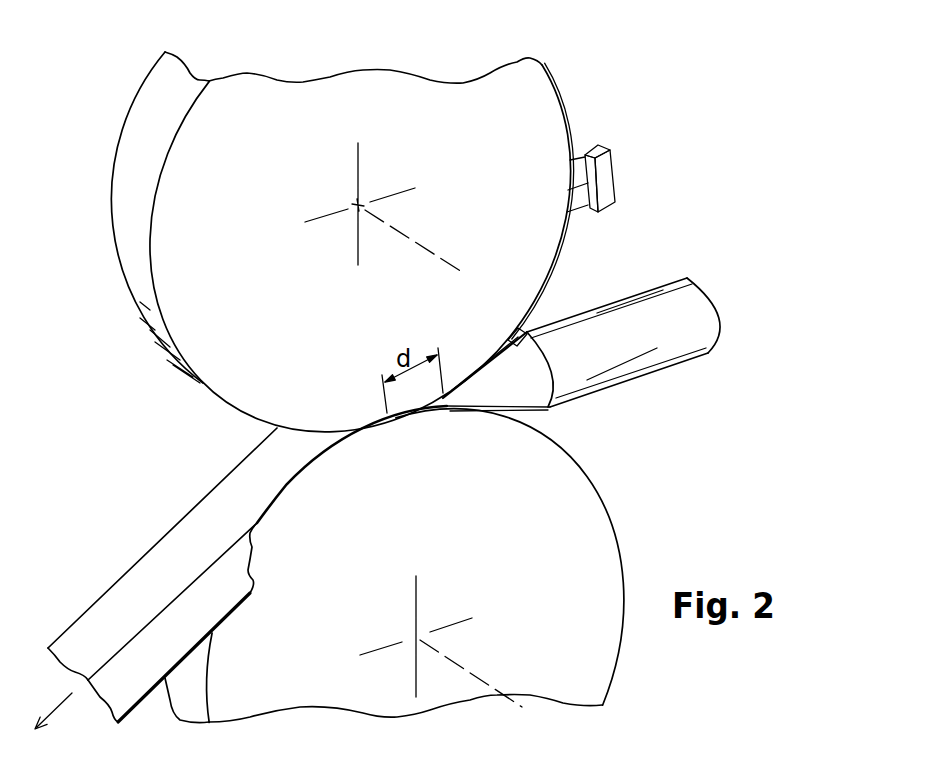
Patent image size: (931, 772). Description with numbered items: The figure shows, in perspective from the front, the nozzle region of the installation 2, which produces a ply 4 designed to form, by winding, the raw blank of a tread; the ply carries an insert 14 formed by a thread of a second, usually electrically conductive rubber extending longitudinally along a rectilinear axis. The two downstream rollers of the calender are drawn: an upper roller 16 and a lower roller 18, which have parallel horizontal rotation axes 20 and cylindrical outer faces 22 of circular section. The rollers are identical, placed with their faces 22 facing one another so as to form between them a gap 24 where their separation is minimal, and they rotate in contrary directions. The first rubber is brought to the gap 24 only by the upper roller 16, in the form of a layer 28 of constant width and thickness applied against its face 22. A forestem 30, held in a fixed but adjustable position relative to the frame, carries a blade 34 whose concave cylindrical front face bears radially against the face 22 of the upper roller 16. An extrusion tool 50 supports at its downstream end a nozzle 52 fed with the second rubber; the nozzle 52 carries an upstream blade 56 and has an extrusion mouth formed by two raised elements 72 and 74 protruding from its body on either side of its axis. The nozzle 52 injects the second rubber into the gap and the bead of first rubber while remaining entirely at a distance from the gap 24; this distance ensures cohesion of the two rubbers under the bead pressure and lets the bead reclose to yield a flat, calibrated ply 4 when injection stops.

The installation 2 is at (552, 28).
The ply 4 is at (150, 587).
The insert 14 is at (207, 553).
The upper roller 16 is at (140, 170).
The lower roller 18 is at (282, 675).
The rotation axis 20 is at (452, 262).
The cylindrical outer face 22 is at (102, 251).
The gap 24 is at (316, 443).
The layer 28 is at (566, 110).
The forestem 30 is at (588, 192).
The blade 34 is at (577, 207).
The extrusion tool 50 is at (672, 333).
The nozzle 52 is at (532, 386).
The upstream blade 56 is at (525, 328).
The raised element 72 is at (508, 347).
The raised element 74 is at (510, 412).